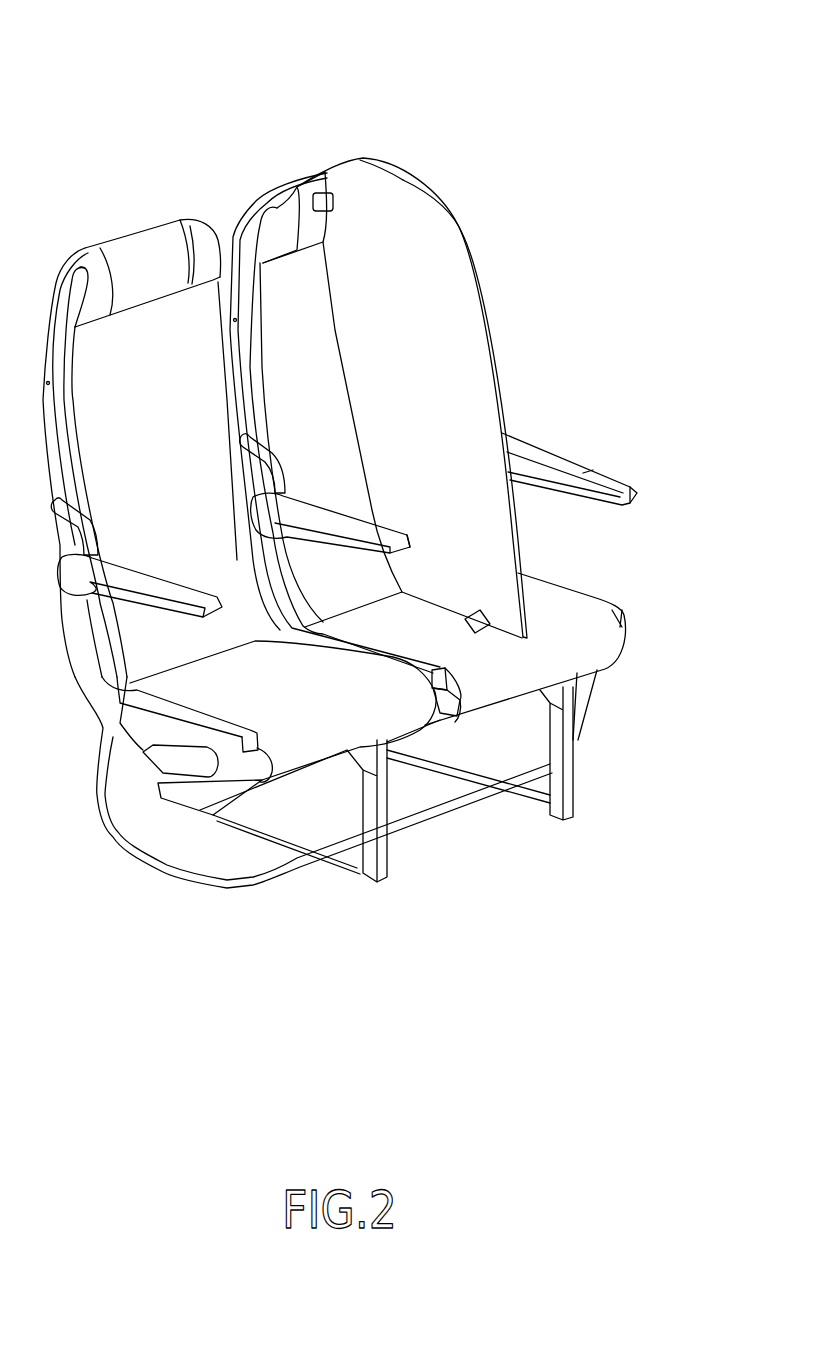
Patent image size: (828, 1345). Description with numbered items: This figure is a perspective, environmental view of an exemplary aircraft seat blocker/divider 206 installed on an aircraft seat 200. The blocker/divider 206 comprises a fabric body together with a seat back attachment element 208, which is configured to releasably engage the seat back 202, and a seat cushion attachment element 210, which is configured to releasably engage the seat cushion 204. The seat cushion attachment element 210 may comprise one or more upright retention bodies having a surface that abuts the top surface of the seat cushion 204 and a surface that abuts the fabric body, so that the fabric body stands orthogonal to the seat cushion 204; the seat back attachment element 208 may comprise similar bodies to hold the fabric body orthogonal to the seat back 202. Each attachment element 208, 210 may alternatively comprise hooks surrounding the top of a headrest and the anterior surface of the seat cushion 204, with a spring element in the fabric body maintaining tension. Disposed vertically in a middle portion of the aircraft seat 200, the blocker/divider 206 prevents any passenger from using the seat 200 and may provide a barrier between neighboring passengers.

The aircraft seat 200 is at (593, 74).
The seat back 202 is at (277, 203).
The seat cushion 204 is at (583, 617).
The aircraft seat blocker/divider 206 is at (467, 368).
The seat back attachment element 208 is at (323, 193).
The seat cushion attachment element 210 is at (487, 630).